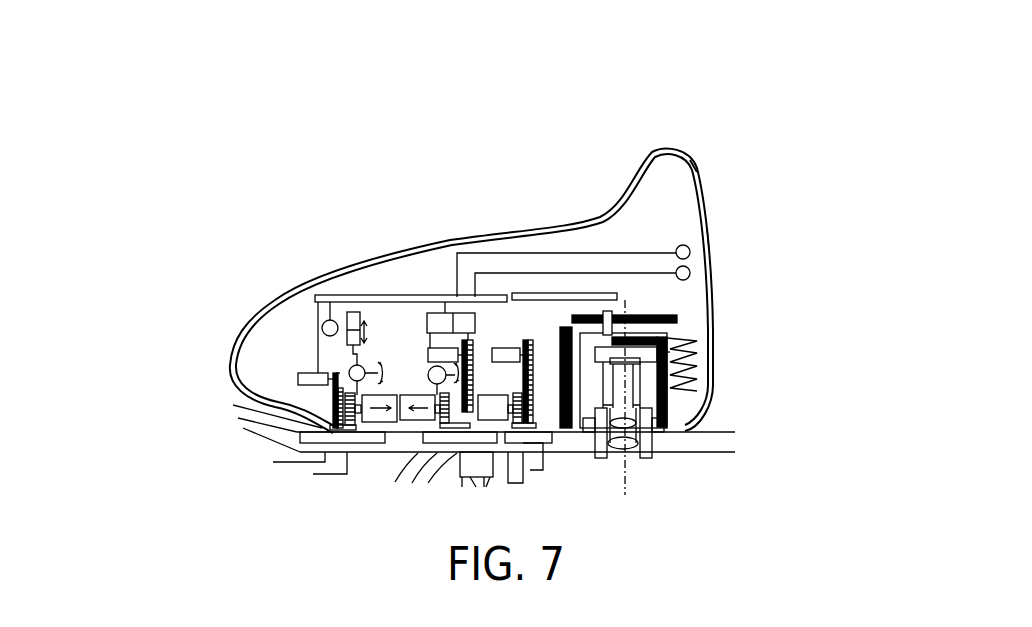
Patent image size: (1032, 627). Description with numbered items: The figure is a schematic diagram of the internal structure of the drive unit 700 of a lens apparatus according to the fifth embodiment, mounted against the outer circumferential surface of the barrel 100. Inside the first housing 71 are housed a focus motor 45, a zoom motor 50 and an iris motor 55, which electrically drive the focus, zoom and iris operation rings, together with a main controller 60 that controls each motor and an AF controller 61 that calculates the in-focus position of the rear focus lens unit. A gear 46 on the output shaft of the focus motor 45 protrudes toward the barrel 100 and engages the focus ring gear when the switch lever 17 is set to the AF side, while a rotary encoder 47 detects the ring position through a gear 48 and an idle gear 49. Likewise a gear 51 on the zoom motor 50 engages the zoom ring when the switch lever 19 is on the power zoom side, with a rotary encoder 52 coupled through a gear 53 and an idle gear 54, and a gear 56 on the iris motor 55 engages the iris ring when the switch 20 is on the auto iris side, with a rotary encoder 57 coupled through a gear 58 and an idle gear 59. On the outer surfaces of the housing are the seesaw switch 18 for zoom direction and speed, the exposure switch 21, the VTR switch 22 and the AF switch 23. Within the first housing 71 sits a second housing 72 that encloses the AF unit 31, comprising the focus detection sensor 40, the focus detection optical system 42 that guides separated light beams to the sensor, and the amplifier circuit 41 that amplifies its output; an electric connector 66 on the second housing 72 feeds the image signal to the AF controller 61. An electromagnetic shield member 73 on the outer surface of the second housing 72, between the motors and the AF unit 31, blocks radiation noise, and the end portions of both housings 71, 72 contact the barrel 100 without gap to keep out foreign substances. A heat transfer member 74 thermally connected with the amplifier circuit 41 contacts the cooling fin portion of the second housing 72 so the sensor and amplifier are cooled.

The drive unit 700 is at (700, 183).
The electromagnetic shield member 73 is at (698, 177).
The first housing 71 is at (708, 230).
The barrel 100 is at (223, 409).
The main controller 60 is at (312, 295).
The AF switch 23 is at (691, 250).
The VTR switch 22 is at (691, 272).
The gear 46 is at (233, 377).
The idle gear 49 is at (333, 405).
The rotary encoder 47 is at (345, 397).
The gear 48 is at (300, 375).
The switch lever 17 is at (349, 372).
The exposure switch 21 is at (333, 385).
The focus motor 45 is at (358, 296).
The switch 20 is at (336, 373).
The switch lever 19 is at (433, 313).
The seesaw switch 18 is at (445, 302).
The rotary encoder 52 is at (440, 348).
The gear 53 is at (467, 340).
The gear 51 is at (443, 393).
The zoom motor 50 is at (402, 395).
The idle gear 54 is at (493, 395).
The rotary encoder 57 is at (510, 348).
The iris motor 55 is at (500, 340).
The gear 56 is at (531, 340).
The focus detection sensor 40 is at (667, 343).
The electric connector 66 is at (652, 315).
The AF controller 61 is at (608, 311).
The idle gear 59 is at (560, 328).
The gear 58 is at (575, 315).
The second housing 72 is at (672, 355).
The heat transfer member 74 is at (660, 380).
The amplifier circuit 41 is at (657, 339).
The AF unit 31 is at (643, 387).
The focus detection optical system 42 is at (636, 423).